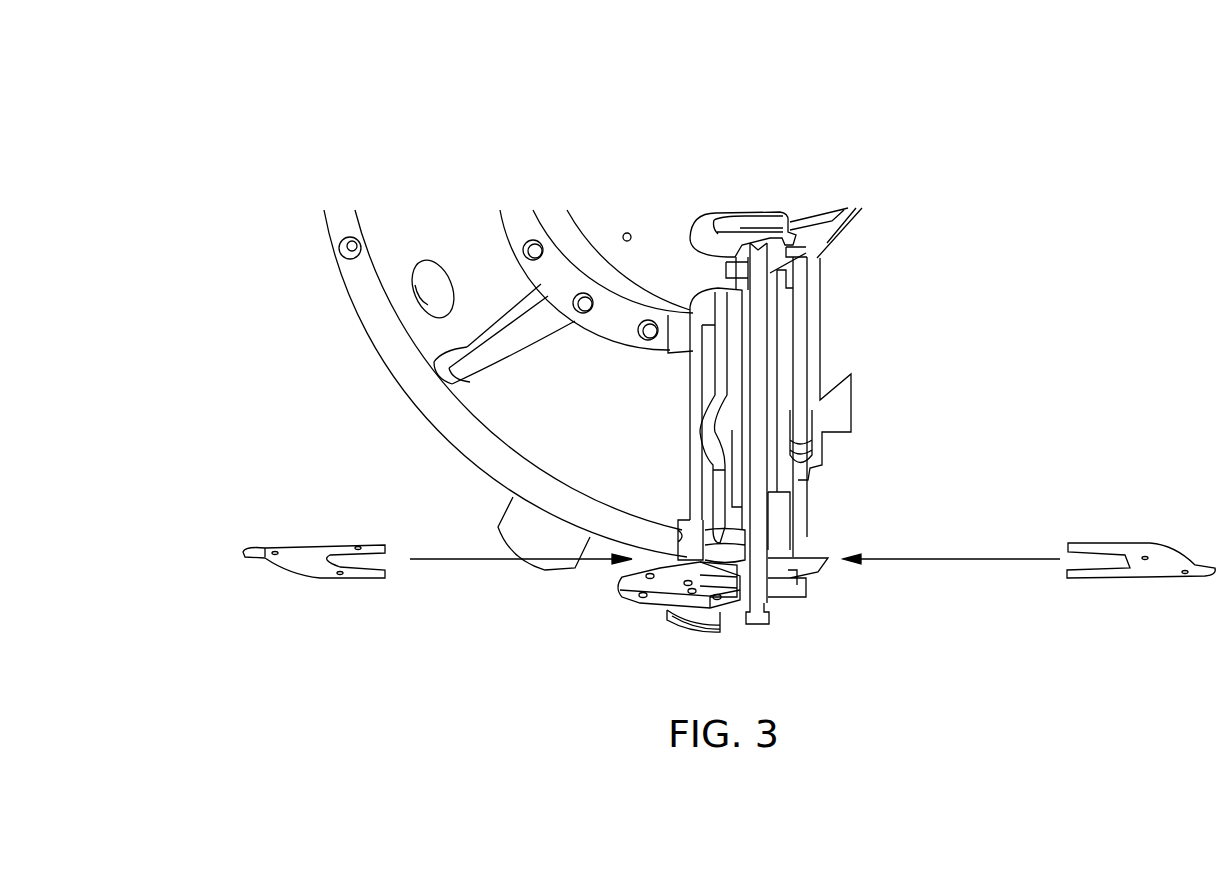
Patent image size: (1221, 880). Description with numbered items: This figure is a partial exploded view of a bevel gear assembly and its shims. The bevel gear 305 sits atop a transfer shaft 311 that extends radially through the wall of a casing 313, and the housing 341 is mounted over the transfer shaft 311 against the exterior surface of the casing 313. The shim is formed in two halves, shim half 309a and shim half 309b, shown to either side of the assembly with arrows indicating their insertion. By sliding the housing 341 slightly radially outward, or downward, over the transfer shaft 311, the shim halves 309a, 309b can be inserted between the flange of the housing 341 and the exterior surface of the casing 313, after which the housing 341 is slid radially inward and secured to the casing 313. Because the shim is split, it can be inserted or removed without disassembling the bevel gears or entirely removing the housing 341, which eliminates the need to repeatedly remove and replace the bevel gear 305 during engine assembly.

The bevel gear 305 is at (743, 247).
The transfer shaft 311 is at (762, 392).
The casing 313 is at (518, 407).
The housing 341 is at (652, 607).
The shim half 309a is at (300, 555).
The shim half 309b is at (1163, 567).